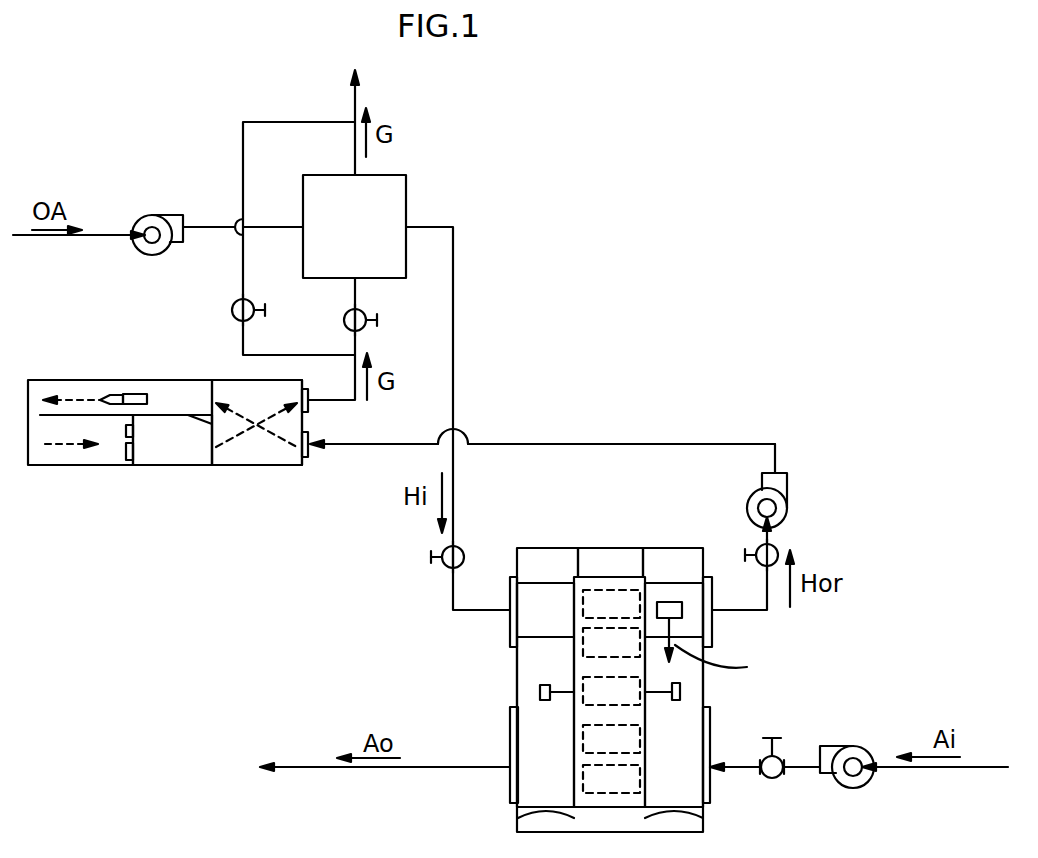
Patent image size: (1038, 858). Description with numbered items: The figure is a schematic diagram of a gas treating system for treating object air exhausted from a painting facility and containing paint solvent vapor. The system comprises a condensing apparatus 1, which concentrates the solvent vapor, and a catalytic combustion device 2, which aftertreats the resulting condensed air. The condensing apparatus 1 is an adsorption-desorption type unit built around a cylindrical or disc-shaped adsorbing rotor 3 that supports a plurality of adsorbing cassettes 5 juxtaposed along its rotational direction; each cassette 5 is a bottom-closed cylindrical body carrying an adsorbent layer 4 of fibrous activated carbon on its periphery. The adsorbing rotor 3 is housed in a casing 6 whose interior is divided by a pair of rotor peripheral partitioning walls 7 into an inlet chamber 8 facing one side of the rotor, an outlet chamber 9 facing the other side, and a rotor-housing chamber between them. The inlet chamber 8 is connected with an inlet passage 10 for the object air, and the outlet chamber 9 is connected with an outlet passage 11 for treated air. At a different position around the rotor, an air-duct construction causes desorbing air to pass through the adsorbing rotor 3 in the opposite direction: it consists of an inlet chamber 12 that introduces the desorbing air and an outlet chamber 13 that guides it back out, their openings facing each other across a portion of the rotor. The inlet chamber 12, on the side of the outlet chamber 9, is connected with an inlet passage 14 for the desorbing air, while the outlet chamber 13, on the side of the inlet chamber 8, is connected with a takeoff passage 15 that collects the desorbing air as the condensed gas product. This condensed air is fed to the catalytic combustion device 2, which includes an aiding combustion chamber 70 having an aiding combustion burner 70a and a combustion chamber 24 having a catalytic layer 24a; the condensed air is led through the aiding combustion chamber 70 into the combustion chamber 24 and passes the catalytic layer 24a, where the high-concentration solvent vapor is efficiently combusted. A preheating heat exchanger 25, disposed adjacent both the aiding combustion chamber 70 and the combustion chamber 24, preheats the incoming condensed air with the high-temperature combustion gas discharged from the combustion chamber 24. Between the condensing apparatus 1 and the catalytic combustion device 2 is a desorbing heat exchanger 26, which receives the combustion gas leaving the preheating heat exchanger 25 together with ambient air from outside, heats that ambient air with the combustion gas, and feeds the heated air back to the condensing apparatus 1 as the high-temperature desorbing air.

The condensing apparatus 1 is at (726, 647).
The catalytic combustion device 2 is at (178, 487).
The adsorbing rotor 3 is at (596, 565).
The adsorbent layer 4 is at (623, 632).
The adsorbing cassette 5 is at (619, 646).
The casing 6 is at (545, 545).
The rotor peripheral partitioning wall 7 is at (518, 818).
The inlet chamber 8 is at (675, 740).
The outlet chamber 9 is at (536, 710).
The inlet passage 10 is at (805, 760).
The outlet passage 11 is at (457, 767).
The inlet chamber 12 is at (543, 585).
The outlet chamber 13 is at (673, 583).
The inlet passage 14 is at (452, 590).
The takeoff passage 15 is at (747, 612).
The combustion chamber 24 is at (145, 480).
The catalytic layer 24a is at (125, 433).
The preheating heat exchanger 25 is at (268, 453).
The desorbing heat exchanger 26 is at (373, 197).
The aiding combustion chamber 70 is at (165, 385).
The aiding combustion burner 70a is at (137, 396).